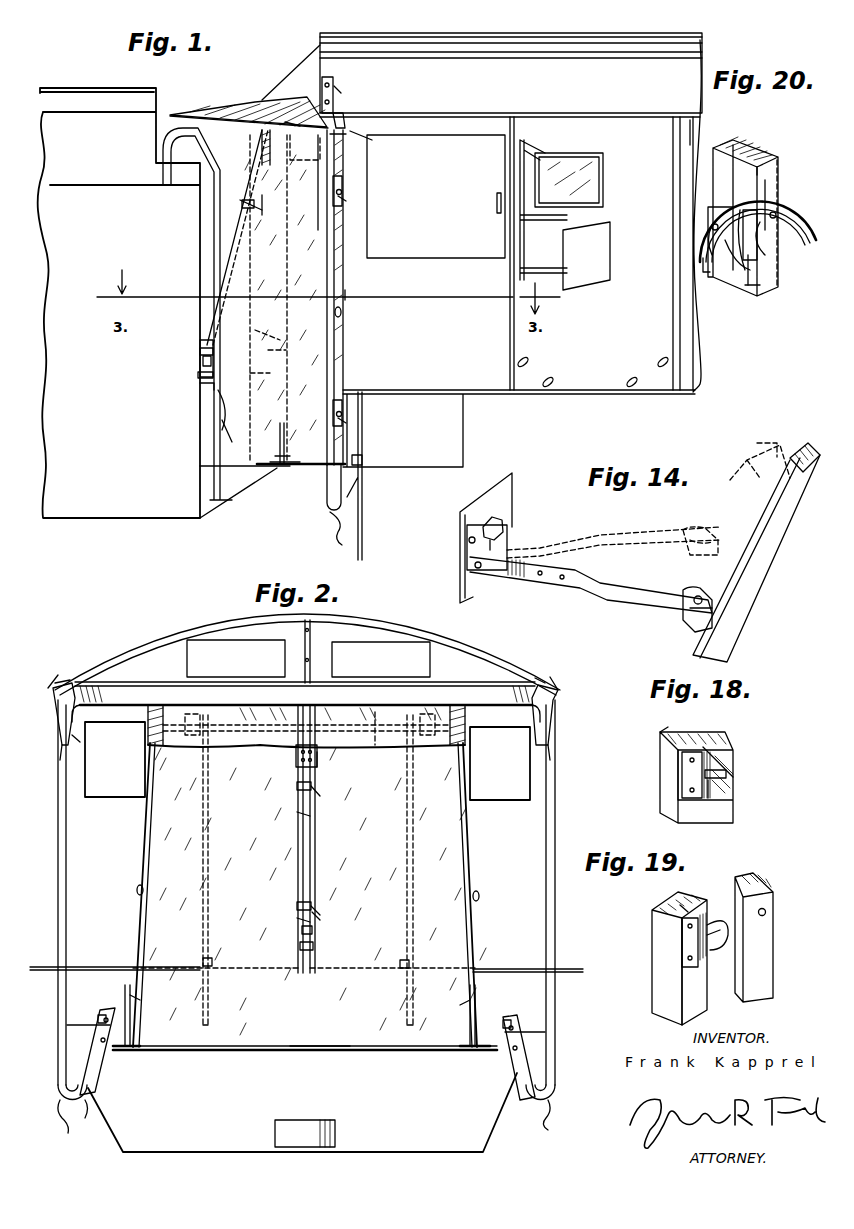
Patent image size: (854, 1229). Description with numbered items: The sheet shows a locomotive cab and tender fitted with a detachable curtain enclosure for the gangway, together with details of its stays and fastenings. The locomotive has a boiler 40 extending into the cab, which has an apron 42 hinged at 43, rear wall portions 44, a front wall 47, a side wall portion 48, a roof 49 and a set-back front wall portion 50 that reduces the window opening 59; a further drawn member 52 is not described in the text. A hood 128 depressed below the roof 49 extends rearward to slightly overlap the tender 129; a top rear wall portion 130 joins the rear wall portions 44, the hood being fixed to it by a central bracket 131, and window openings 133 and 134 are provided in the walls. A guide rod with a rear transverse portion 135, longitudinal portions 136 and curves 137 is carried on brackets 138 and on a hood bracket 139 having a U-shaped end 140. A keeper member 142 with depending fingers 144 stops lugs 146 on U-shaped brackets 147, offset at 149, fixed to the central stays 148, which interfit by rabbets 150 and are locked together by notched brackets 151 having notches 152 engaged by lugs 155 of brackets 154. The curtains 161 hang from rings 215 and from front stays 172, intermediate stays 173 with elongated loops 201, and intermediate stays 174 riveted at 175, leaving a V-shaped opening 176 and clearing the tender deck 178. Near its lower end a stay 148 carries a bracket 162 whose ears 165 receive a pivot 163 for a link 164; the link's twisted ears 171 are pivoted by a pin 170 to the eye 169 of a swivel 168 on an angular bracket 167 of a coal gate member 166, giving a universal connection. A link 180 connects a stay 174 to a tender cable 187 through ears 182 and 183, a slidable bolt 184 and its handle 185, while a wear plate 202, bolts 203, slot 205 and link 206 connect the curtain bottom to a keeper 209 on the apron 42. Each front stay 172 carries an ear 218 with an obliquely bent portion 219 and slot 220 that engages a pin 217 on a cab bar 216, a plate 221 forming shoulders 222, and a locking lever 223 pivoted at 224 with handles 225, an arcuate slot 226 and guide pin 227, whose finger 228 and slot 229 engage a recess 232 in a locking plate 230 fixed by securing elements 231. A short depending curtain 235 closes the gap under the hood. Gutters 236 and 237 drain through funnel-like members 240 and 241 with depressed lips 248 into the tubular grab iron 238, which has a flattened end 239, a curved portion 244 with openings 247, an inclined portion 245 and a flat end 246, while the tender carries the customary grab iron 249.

In FIG. 1, the boiler 40 is at (702, 134).
In FIG. 1, the apron 42 is at (300, 470).
In FIG. 2, the apron 42 is at (320, 1050).
In FIG. 2, the hinge of apron 43 is at (205, 1050).
In FIG. 1, the rear wall portions 44 is at (347, 295).
In FIG. 2, the rear wall portions 44 is at (66, 878).
In FIG. 1, the front wall 47 is at (699, 118).
In FIG. 1, the side wall portion 48 is at (462, 122).
In FIG. 1, the roof 49 is at (700, 40).
In FIG. 2, the roof 49 is at (366, 620).
In FIG. 1, the front wall portion 50 is at (520, 355).
In FIG. 2, the rail 52 is at (46, 967).
In FIG. 1, the window opening 59 is at (480, 148).
In FIG. 1, the hood 128 is at (243, 106).
In FIG. 2, the hood 128 is at (448, 688).
In FIG. 1, the tender 129 is at (82, 518).
In FIG. 2, the top rear wall portion 130 is at (152, 650).
In FIG. 1, the bracket 131 is at (292, 76).
In FIG. 2, the bracket 131 is at (311, 648).
In FIG. 2, the window openings 133 is at (228, 644).
In FIG. 2, the window openings 134 is at (90, 762).
In FIG. 2, the transversely extending portion 135 is at (375, 746).
In FIG. 1, the longitudinally extending portions 136 is at (320, 190).
In FIG. 2, the curved portions 137 is at (180, 708).
In FIG. 1, the supporting brackets 138 is at (372, 140).
In FIG. 1, the bracket 139 is at (294, 115).
In FIG. 2, the bracket 139 is at (330, 695).
In FIG. 2, the U-shaped lower end portion 140 is at (366, 690).
In FIG. 2, the keeper member 142 is at (276, 690).
In FIG. 2, the depending fingers 144 is at (250, 712).
In FIG. 2, the lugs 146 is at (250, 690).
In FIG. 2, the U-shaped bracket members 147 is at (318, 760).
In FIG. 1, the stays 148 is at (255, 270).
In FIG. 14, the stays 148 is at (745, 475).
In FIG. 2, the stays 148 is at (316, 835).
In FIG. 2, the offset 149 is at (297, 752).
In FIG. 14, the rabbet 150 is at (800, 446).
In FIG. 1, the U-shaped bracket member 151 is at (246, 200).
In FIG. 2, the U-shaped bracket member 151 is at (298, 786).
In FIG. 2, the notches 152 is at (297, 816).
In FIG. 1, the U-shaped bracket member 154 is at (266, 208).
In FIG. 2, the U-shaped bracket member 154 is at (318, 792).
In FIG. 1, the lugs 155 is at (242, 205).
In FIG. 2, the lugs 155 is at (315, 913).
In FIG. 1, the curtains 161 is at (322, 345).
In FIG. 20, the curtains 161 is at (779, 162).
In FIG. 2, the curtains 161 is at (166, 832).
In FIG. 1, the U-shaped bracket members 162 is at (203, 359).
In FIG. 14, the U-shaped bracket members 162 is at (718, 545).
In FIG. 2, the U-shaped bracket members 162 is at (302, 928).
In FIG. 1, the pivot member 163 is at (203, 343).
In FIG. 14, the pivot member 163 is at (698, 590).
In FIG. 14, the link 164 is at (640, 540).
In FIG. 2, the link 164 is at (313, 930).
In FIG. 1, the ears 165 is at (200, 375).
In FIG. 14, the ears 165 is at (700, 527).
In FIG. 14, the coal gate members 166 is at (515, 500).
In FIG. 14, the angular bracket 167 is at (470, 541).
In FIG. 14, the swivel member 168 is at (510, 532).
In FIG. 14, the eye 169 is at (515, 540).
In FIG. 14, the pivot member 170 is at (475, 566).
In FIG. 14, the pivot ears 171 is at (505, 548).
In FIG. 20, the front stay members 172 is at (755, 175).
In FIG. 18, the front stay members 172 is at (668, 755).
In FIG. 19, the front stay members 172 is at (692, 905).
In FIG. 1, the intermediate stay members 173 is at (298, 300).
In FIG. 2, the intermediate stay members 173 is at (472, 866).
In FIG. 1, the intermediate stay members 174 is at (252, 300).
In FIG. 2, the intermediate stay members 174 is at (210, 865).
In FIG. 2, the rivets 175 is at (210, 820).
In FIG. 2, the V-shaped opening 176 is at (322, 1050).
In FIG. 1, the deck 178 is at (244, 480).
In FIG. 1, the link 180 is at (216, 395).
In FIG. 2, the link 180 is at (213, 962).
In FIG. 1, the pivot ears 182 is at (270, 374).
In FIG. 1, the ear 183 is at (270, 332).
In FIG. 1, the slidable bolt-like member 184 is at (225, 430).
In FIG. 1, the handle portion 185 is at (282, 352).
In FIG. 1, the flexible member 187 is at (200, 392).
In FIG. 2, the elongated loop 201 is at (160, 745).
In FIG. 2, the wear plate 202 is at (135, 1000).
In FIG. 2, the bolts 203 is at (100, 1018).
In FIG. 1, the slot 205 is at (286, 433).
In FIG. 1, the link 206 is at (280, 455).
In FIG. 2, the link 206 is at (126, 1010).
In FIG. 1, the keeper 209 is at (283, 456).
In FIG. 2, the keeper 209 is at (135, 1045).
In FIG. 1, the rings 215 is at (310, 160).
In FIG. 2, the rings 215 is at (198, 712).
In FIG. 1, the vertically extending bars 216 is at (345, 262).
In FIG. 20, the vertically extending bars 216 is at (736, 138).
In FIG. 18, the vertically extending bars 216 is at (730, 740).
In FIG. 19, the vertically extending bars 216 is at (756, 874).
In FIG. 1, the pin 217 is at (344, 193).
In FIG. 18, the pin 217 is at (728, 774).
In FIG. 19, the pin 217 is at (767, 912).
In FIG. 1, the ear 218 is at (345, 182).
In FIG. 18, the ear 218 is at (683, 780).
In FIG. 19, the ear 218 is at (683, 945).
In FIG. 1, the bent portion 219 is at (346, 199).
In FIG. 18, the bent portion 219 is at (725, 760).
In FIG. 19, the bent portion 219 is at (720, 916).
In FIG. 18, the slot 220 is at (712, 790).
In FIG. 19, the slot 220 is at (714, 945).
In FIG. 18, the plate 221 is at (680, 732).
In FIG. 19, the plate 221 is at (660, 900).
In FIG. 18, the shoulders 222 is at (712, 740).
In FIG. 19, the shoulders 222 is at (685, 905).
In FIG. 20, the locking lever 223 is at (755, 265).
In FIG. 20, the pivot 224 is at (778, 212).
In FIG. 1, the handle members 225 is at (343, 315).
In FIG. 20, the handle members 225 is at (775, 232).
In FIG. 2, the handle members 225 is at (136, 888).
In FIG. 20, the arcuate slot 226 is at (772, 245).
In FIG. 20, the headed guide pin 227 is at (777, 160).
In FIG. 20, the locking finger 228 is at (762, 283).
In FIG. 20, the slot 229 is at (760, 166).
In FIG. 20, the locking plate 230 is at (728, 272).
In FIG. 20, the securing elements 231 is at (714, 258).
In FIG. 20, the recess 232 is at (740, 275).
In FIG. 1, the depending curtain 235 is at (261, 160).
In FIG. 2, the depending curtain 235 is at (221, 746).
In FIG. 1, the gutter 236 is at (552, 113).
In FIG. 2, the gutter 236 is at (58, 684).
In FIG. 1, the gutter 237 is at (212, 114).
In FIG. 2, the gutter 237 is at (240, 700).
In FIG. 1, the grab iron 238 is at (330, 256).
In FIG. 2, the grab iron 238 is at (68, 843).
In FIG. 1, the flattened end portion 239 is at (338, 87).
In FIG. 2, the flattened end portion 239 is at (70, 684).
In FIG. 1, the funnel-like member 240 is at (342, 112).
In FIG. 2, the funnel-like member 240 is at (55, 718).
In FIG. 1, the funnel-like member 241 is at (340, 134).
In FIG. 2, the funnel-like member 241 is at (82, 738).
In FIG. 1, the curved portion 244 is at (328, 508).
In FIG. 2, the curved portion 244 is at (545, 746).
In FIG. 1, the upwardly inclined portion 245 is at (363, 494).
In FIG. 2, the upwardly inclined portion 245 is at (100, 1058).
In FIG. 1, the flat end 246 is at (364, 458).
In FIG. 2, the flat end 246 is at (100, 1025).
In FIG. 1, the openings 247 is at (335, 526).
In FIG. 2, the openings 247 is at (72, 1100).
In FIG. 1, the depressed lips 248 is at (333, 72).
In FIG. 2, the depressed lips 248 is at (50, 686).
In FIG. 1, the grab iron 249 is at (212, 254).